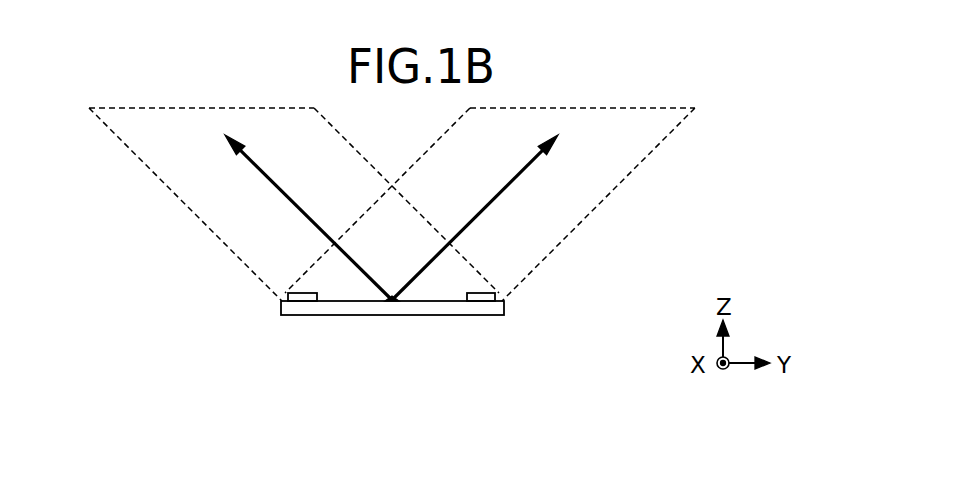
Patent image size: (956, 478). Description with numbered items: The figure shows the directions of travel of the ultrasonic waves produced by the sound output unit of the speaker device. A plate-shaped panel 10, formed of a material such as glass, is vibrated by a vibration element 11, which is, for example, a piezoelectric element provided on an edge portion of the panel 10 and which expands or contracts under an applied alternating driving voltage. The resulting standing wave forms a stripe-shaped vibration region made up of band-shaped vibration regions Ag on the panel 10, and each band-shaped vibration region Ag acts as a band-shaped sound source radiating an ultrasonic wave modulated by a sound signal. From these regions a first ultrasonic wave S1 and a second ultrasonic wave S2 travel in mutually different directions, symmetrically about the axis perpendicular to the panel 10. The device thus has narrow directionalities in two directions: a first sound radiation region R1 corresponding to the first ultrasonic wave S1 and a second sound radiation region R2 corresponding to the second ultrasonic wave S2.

The panel 10 is at (504, 308).
The vibration element 11 is at (301, 301).
The band-shaped vibration region Ag is at (392, 315).
The first sound radiation region R1 is at (602, 204).
The second sound radiation region R2 is at (182, 204).
The first ultrasonic wave S1 is at (482, 209).
The second ultrasonic wave S2 is at (300, 209).